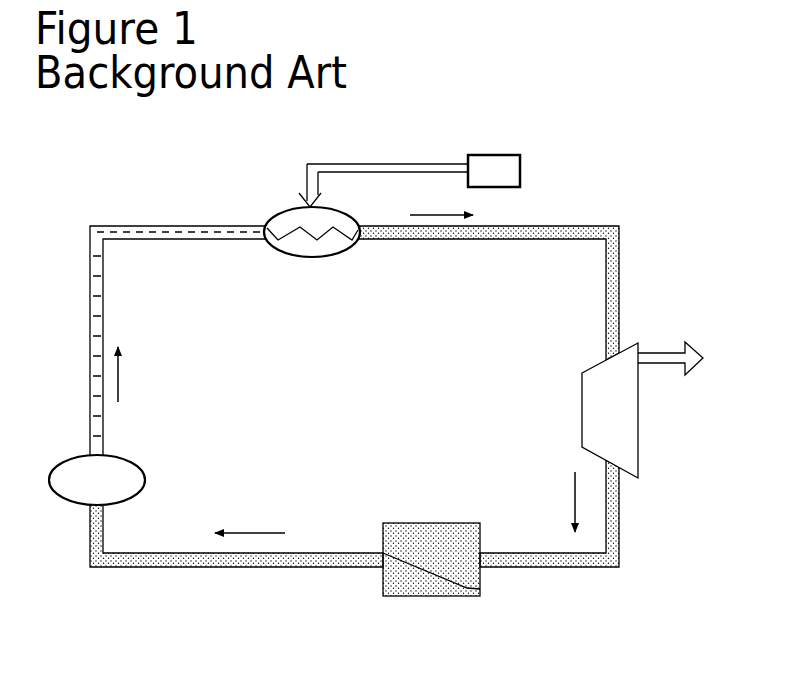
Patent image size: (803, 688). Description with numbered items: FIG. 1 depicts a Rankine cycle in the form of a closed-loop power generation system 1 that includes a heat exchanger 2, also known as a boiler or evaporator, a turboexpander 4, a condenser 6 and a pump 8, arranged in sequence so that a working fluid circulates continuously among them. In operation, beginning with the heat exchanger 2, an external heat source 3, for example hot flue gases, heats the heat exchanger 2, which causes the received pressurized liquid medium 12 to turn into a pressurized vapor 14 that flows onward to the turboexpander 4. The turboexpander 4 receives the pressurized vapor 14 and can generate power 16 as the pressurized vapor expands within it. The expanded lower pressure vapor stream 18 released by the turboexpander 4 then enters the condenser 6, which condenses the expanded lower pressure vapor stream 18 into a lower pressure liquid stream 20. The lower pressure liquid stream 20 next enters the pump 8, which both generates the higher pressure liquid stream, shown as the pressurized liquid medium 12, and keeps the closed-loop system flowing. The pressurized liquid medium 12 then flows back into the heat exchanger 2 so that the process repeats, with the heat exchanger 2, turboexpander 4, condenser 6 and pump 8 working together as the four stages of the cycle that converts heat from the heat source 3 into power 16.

The power generation system 1 is at (125, 187).
The heat exchanger 2 is at (343, 210).
The heat source 3 is at (513, 172).
The turboexpander 4 is at (623, 450).
The condenser 6 is at (420, 523).
The pump 8 is at (140, 468).
The pressurized liquid medium 12 is at (262, 230).
The pressurized vapor 14 is at (370, 240).
The power 16 is at (693, 363).
The expanded lower pressure vapor stream 18 is at (617, 520).
The lower pressure liquid stream 20 is at (332, 553).